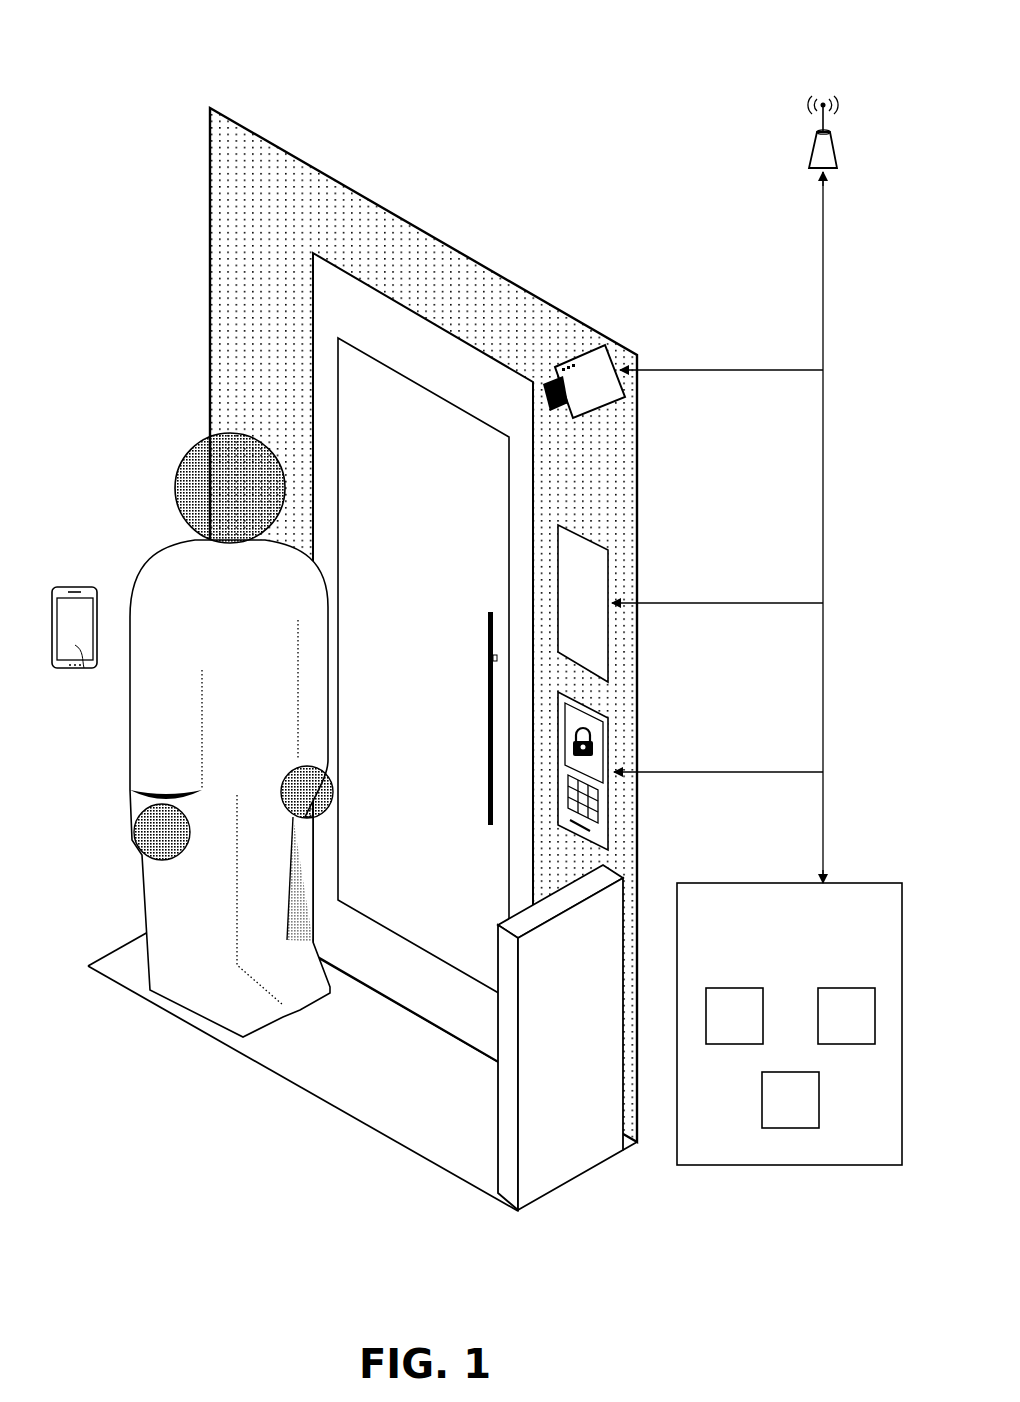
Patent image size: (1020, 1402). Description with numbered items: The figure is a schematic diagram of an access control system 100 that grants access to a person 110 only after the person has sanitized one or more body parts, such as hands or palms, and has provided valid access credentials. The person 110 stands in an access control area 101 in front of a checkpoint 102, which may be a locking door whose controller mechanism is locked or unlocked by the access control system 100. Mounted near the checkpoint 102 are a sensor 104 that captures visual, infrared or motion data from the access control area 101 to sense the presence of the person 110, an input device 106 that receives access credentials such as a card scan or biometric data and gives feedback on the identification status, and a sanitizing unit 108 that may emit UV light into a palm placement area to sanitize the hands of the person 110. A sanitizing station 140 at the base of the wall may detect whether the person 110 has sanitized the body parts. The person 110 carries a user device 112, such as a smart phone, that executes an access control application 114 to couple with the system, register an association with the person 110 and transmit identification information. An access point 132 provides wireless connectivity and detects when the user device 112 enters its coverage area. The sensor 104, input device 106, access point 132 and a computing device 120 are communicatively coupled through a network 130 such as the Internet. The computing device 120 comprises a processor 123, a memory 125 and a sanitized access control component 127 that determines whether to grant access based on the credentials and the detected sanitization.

The access control system 100 is at (108, 70).
The access control area 101 is at (266, 138).
The checkpoint 102 is at (452, 512).
The sensor 104 is at (579, 345).
The input device 106 is at (592, 705).
The sanitizing unit 108 is at (615, 535).
The person 110 is at (190, 455).
The user device 112 is at (72, 585).
The access control application 114 is at (79, 670).
The computing device 120 is at (789, 1024).
The processor 123 is at (734, 1016).
The memory 125 is at (846, 1016).
The sanitized access control component 127 is at (790, 1100).
The network 130 is at (740, 358).
The access point 132 is at (810, 145).
The sanitizing station 140 is at (508, 1105).